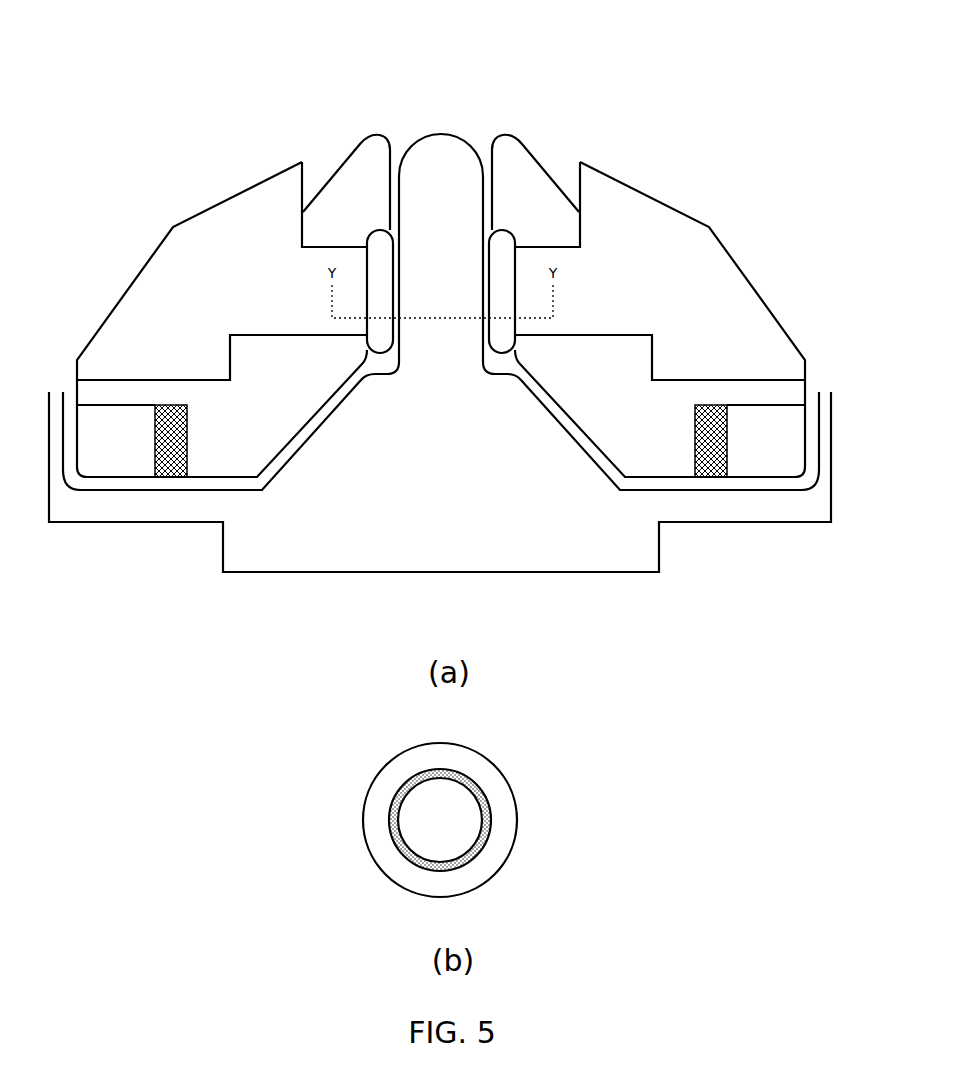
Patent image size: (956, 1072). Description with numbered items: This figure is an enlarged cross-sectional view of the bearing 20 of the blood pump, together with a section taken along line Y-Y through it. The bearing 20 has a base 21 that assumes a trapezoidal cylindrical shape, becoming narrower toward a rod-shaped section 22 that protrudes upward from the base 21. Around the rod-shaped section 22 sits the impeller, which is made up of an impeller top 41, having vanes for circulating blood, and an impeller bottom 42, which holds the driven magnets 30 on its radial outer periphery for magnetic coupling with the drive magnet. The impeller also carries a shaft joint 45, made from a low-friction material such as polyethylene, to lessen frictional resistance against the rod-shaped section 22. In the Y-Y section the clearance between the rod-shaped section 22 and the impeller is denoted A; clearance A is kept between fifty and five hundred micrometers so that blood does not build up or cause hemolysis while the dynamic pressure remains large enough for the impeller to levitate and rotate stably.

The bearing 20 is at (450, 100).
The base 21 is at (452, 438).
The rod-shaped section 22 is at (430, 233).
The driven magnet 30 is at (733, 428).
The impeller top 41 is at (267, 288).
The impeller bottom 42 is at (237, 415).
The shaft joint 45 is at (503, 282).
The clearance A is at (388, 815).